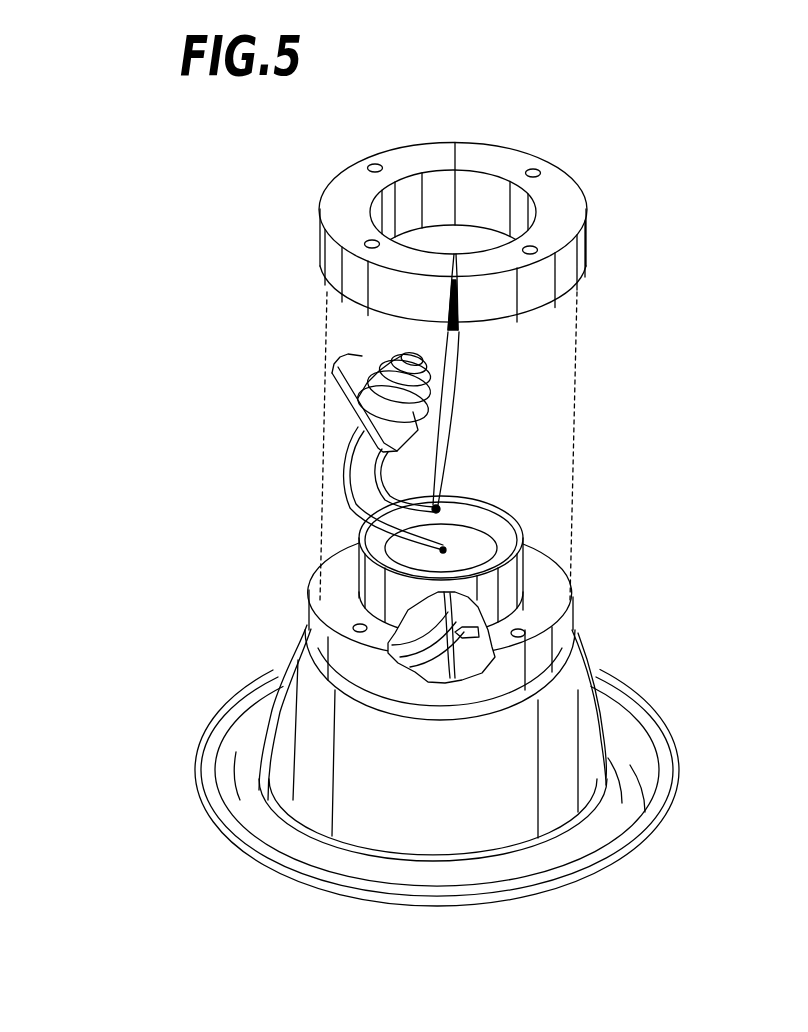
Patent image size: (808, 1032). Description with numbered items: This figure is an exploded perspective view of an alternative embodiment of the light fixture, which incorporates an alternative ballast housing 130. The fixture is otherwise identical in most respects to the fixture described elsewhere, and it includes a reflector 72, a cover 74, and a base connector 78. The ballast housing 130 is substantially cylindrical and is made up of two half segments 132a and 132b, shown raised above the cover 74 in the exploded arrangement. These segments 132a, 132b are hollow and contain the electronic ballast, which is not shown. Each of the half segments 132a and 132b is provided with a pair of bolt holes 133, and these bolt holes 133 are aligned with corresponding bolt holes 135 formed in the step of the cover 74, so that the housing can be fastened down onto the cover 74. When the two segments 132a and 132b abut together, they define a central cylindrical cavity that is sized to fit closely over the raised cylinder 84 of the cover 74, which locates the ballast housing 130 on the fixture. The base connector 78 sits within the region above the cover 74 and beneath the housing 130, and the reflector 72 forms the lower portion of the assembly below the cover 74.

The ballast housing 130 is at (491, 221).
The half segment 132a is at (410, 223).
The half segment 132b is at (522, 237).
The bolt holes 133 is at (372, 243).
The base connector 78 is at (292, 400).
The raised cylinder 84 is at (490, 502).
The cover 74 is at (464, 585).
The bolt holes 135 is at (355, 622).
The reflector 72 is at (597, 676).